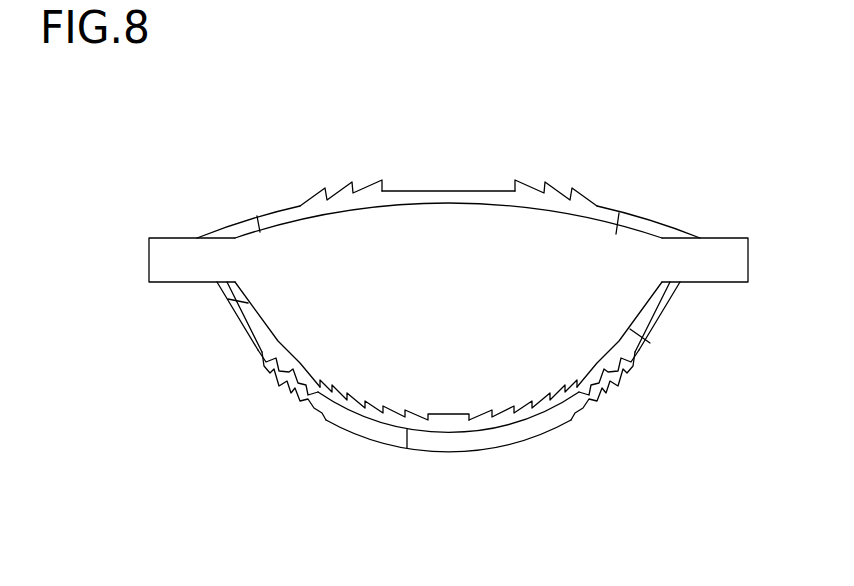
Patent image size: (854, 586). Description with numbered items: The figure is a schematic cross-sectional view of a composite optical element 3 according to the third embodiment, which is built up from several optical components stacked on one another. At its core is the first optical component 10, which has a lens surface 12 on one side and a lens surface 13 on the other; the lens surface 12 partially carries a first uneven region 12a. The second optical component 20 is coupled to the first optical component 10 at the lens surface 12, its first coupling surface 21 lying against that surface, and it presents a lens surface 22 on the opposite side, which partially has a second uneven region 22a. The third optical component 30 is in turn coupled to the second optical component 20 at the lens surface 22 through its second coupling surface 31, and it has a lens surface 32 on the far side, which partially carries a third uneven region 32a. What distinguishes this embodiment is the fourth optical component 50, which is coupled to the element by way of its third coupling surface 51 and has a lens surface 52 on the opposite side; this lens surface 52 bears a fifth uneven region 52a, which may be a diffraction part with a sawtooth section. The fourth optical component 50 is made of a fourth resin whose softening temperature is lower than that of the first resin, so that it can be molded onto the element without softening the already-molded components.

The composite optical element 3 is at (571, 138).
The first optical component 10 is at (618, 218).
The lens surface (fourth optical functional surface) 13 is at (255, 214).
The fourth optical component 50 is at (285, 215).
The third coupling surface 51 is at (445, 203).
The lens surface (fifth optical functional surface) 52 is at (413, 190).
The fifth uneven region 52a is at (357, 171).
The lens surface (first optical functional surface) 12 is at (242, 302).
The first uneven region 12a is at (528, 412).
The second optical component 20 is at (672, 306).
The first coupling surface 21 is at (648, 343).
The lens surface (second optical functional surface) 22 is at (578, 400).
The second uneven region 22a is at (264, 361).
The third optical component 30 is at (492, 437).
The second coupling surface 31 is at (407, 448).
The lens surface (third optical functional surface) 32 is at (342, 428).
The third uneven region 32a is at (273, 397).